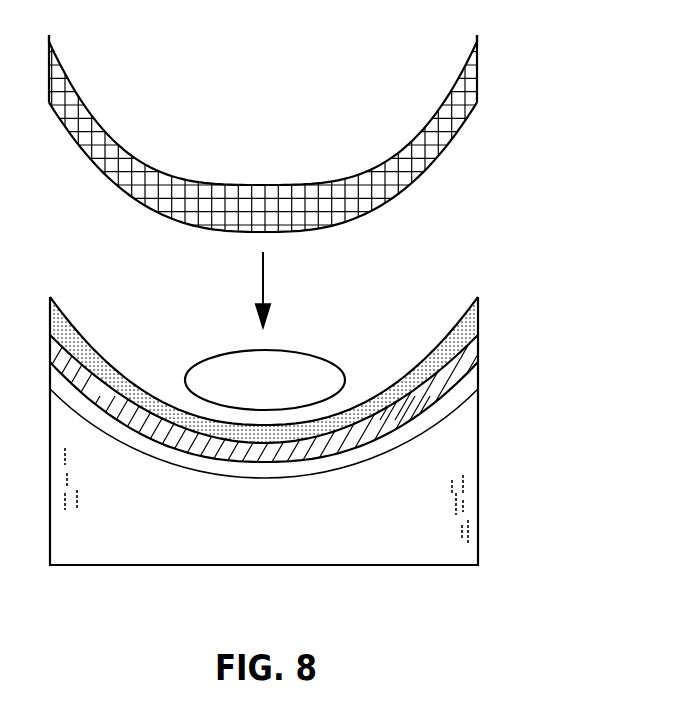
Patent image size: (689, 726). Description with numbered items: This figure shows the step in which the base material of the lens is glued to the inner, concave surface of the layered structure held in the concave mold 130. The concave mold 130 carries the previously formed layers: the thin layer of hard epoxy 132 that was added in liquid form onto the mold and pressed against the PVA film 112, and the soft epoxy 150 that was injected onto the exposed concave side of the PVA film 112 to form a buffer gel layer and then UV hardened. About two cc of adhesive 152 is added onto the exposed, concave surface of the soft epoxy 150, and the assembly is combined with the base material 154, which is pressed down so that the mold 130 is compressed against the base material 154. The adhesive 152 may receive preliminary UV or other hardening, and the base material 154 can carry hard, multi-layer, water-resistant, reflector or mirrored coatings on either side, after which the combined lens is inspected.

The base material 154 is at (461, 132).
The soft epoxy 150 is at (478, 322).
The adhesive 152 is at (320, 378).
The PVA film 112 is at (475, 351).
The hard epoxy 132 is at (474, 380).
The concave mold 130 is at (382, 532).